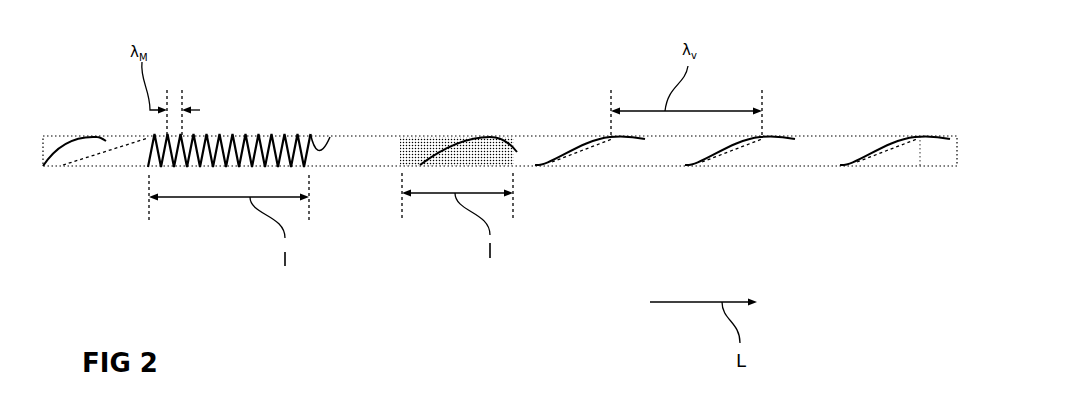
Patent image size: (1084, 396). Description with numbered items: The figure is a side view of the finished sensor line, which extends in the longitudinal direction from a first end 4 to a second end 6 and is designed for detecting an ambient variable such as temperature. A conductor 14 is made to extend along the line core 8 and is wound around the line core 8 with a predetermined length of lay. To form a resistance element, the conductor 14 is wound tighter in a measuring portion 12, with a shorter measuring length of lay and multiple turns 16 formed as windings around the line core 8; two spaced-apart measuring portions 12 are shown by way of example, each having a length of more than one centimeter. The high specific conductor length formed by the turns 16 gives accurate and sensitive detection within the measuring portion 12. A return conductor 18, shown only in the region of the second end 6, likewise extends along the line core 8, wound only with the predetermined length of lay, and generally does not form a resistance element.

The first end 4 is at (95, 98).
The second end 6 is at (906, 108).
The line core 8 is at (813, 152).
The measuring portion 12 is at (239, 149).
The conductor 14 is at (459, 150).
The turns 16 is at (333, 149).
The return conductor 18 is at (830, 167).